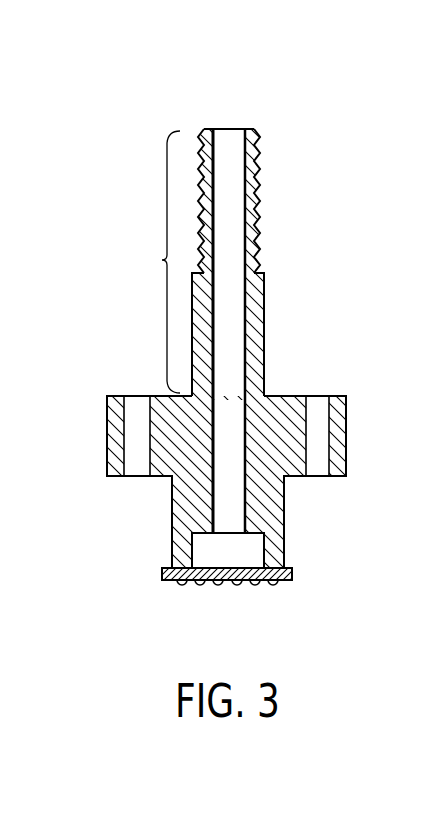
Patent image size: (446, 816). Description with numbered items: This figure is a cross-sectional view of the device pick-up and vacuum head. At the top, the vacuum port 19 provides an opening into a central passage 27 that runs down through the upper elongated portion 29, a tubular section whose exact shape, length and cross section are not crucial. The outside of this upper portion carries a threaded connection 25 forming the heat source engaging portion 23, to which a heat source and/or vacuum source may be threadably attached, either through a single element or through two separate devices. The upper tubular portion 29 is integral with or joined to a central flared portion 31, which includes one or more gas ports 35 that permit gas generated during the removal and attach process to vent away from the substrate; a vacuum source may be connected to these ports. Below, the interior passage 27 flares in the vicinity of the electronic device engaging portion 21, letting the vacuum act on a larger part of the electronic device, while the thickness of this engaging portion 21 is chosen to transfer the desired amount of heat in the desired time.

The vacuum port 19 is at (233, 129).
The electronic device engaging portion 21 is at (302, 561).
The heat source engaging portion 23 is at (223, 330).
The threaded connection 25 is at (258, 170).
The central passage 27 is at (238, 218).
The upper elongated portion 29 is at (152, 262).
The central flared portion 31 is at (283, 396).
The gas ports 35 is at (137, 432).